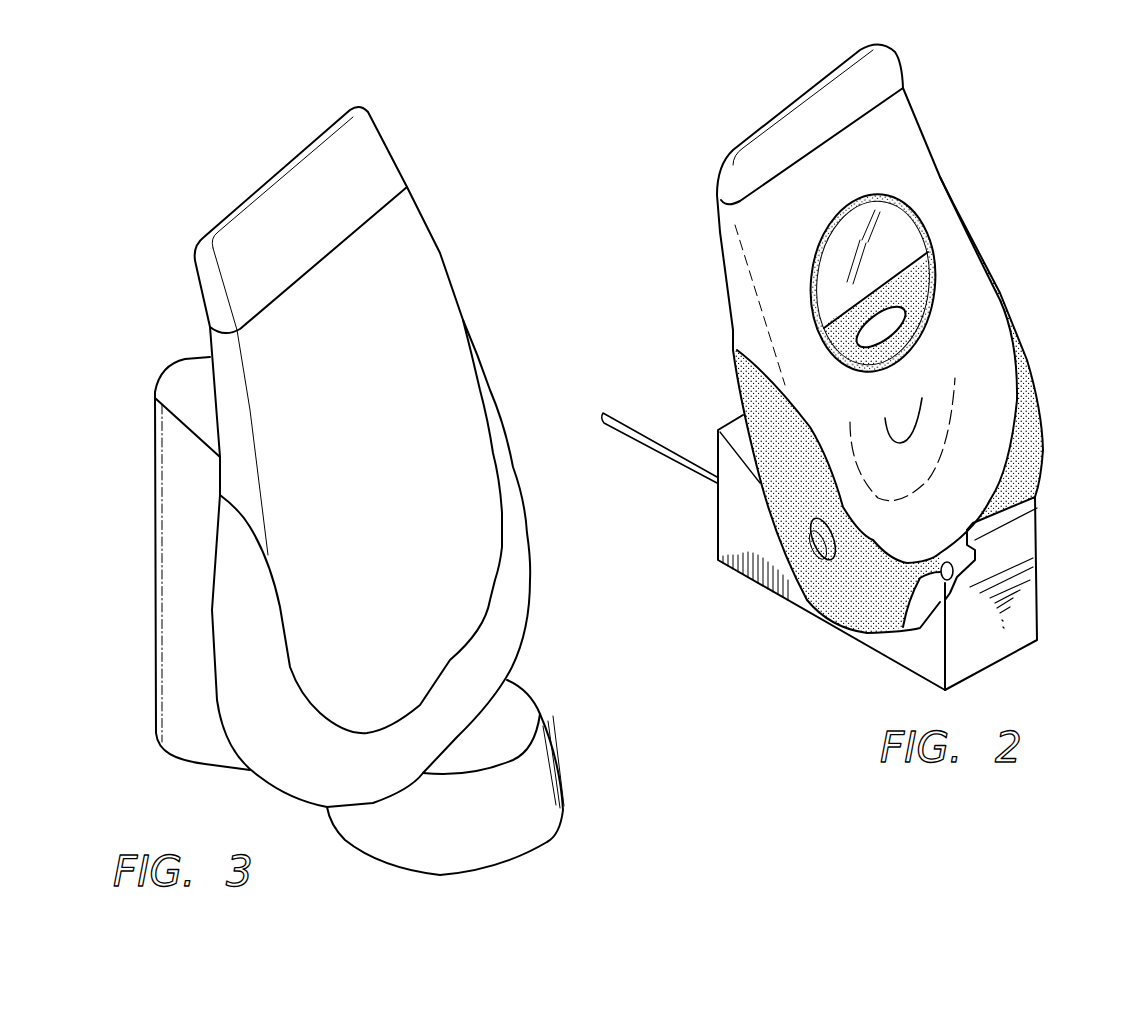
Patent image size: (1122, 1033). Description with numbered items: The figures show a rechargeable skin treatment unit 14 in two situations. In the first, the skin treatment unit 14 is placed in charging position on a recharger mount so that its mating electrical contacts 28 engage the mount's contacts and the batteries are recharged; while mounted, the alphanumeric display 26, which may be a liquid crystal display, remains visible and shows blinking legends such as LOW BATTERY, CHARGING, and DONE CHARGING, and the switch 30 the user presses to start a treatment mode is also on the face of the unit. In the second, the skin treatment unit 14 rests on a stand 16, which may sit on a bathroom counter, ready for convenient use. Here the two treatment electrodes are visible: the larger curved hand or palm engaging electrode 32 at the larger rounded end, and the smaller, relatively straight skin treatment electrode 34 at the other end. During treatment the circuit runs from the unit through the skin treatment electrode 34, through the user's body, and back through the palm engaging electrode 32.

In FIG. 2, the skin treatment unit 14 is at (925, 137).
In FIG. 3, the stand 16 is at (182, 513).
In FIG. 2, the alphanumeric display 26 is at (900, 215).
In FIG. 2, the mating electrical contacts 28 is at (930, 573).
In FIG. 2, the switch 30 is at (886, 325).
In FIG. 3, the hand or palm engaging electrode 32 is at (453, 700).
In FIG. 3, the skin treatment electrode 34 is at (270, 230).